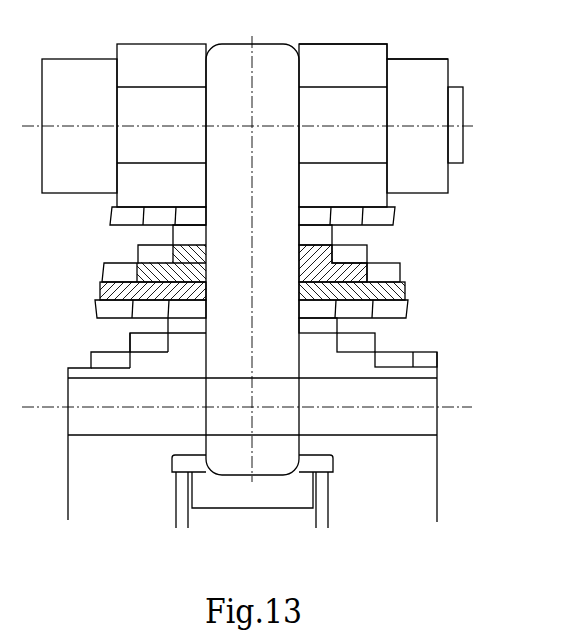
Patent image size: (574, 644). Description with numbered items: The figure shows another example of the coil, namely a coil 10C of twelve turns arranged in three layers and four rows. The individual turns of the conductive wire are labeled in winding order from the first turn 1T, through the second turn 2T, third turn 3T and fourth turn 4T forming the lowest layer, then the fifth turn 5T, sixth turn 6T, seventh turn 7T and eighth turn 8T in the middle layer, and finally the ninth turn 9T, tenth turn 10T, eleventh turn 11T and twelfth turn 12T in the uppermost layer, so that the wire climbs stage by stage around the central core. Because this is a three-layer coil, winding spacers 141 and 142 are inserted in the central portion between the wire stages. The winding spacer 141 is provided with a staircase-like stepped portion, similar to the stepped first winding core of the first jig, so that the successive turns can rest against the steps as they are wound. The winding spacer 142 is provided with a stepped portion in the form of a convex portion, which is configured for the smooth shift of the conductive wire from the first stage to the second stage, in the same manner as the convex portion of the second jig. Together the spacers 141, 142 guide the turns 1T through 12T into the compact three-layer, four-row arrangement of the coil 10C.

The winding spacer 141 is at (137, 272).
The winding spacer 142 is at (100, 296).
The coil 10C is at (400, 263).
The first tooth 1T is at (406, 359).
The second tooth 2T is at (356, 342).
The third tooth 3T is at (318, 325).
The fourth tooth 4T is at (353, 309).
The fifth tooth 5T is at (359, 309).
The sixth tooth 6T is at (391, 310).
The seventh tooth 7T is at (383, 272).
The eighth tooth 8T is at (349, 254).
The ninth tooth 9T is at (315, 235).
The tenth tooth 10T is at (347, 216).
The eleventh tooth 11T is at (349, 216).
The twelfth tooth 12T is at (378, 217).